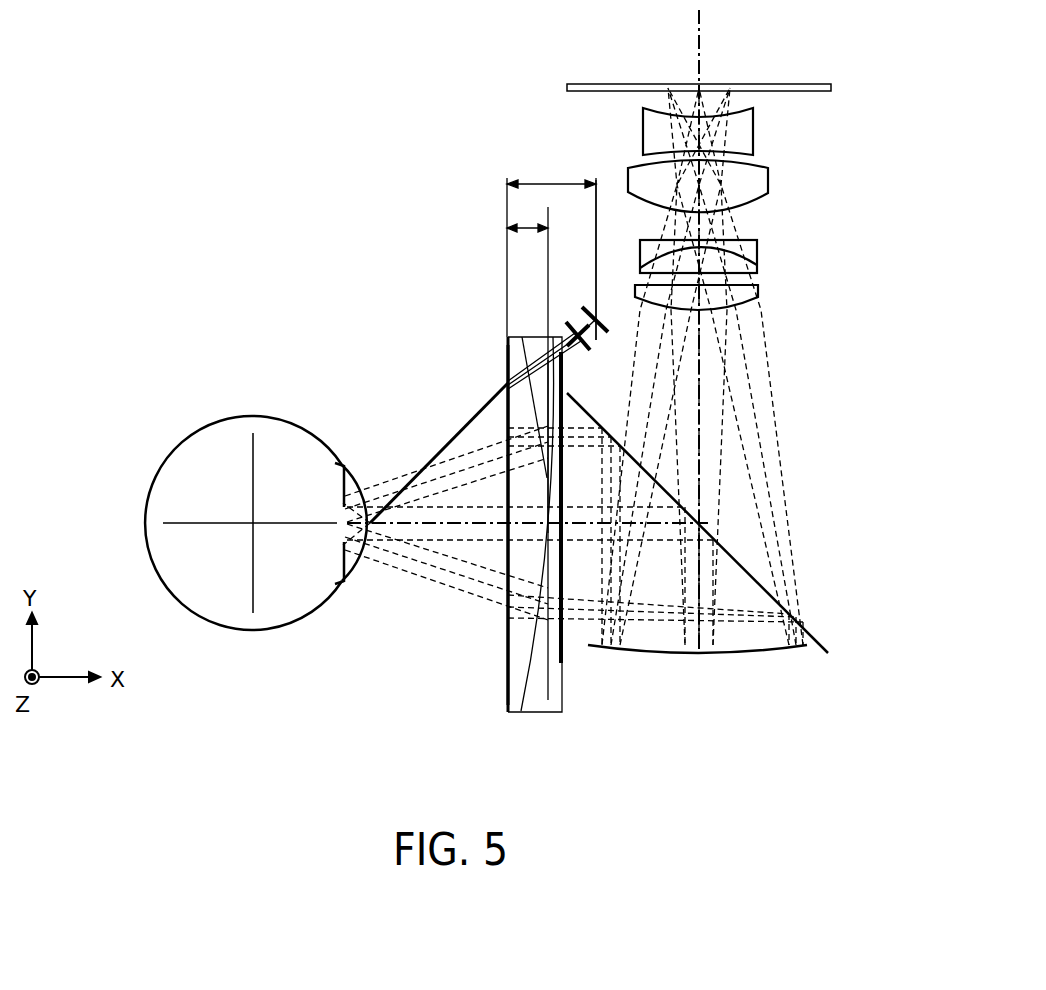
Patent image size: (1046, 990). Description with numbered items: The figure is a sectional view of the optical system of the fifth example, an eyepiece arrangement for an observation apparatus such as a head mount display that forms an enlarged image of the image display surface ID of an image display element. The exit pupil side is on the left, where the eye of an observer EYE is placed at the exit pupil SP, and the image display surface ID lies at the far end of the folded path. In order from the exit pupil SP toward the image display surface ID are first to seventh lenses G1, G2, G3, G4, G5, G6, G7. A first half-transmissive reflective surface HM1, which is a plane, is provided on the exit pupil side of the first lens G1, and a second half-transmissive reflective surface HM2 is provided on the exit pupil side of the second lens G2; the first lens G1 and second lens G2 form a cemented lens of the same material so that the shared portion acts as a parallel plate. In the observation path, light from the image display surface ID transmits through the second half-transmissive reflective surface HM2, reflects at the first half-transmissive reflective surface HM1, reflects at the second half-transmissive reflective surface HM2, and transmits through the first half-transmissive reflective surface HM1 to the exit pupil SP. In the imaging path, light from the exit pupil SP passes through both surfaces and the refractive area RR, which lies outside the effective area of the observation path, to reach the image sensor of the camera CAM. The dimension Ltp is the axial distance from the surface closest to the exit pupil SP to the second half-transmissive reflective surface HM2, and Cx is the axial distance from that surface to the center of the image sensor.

The image display surface ID is at (707, 84).
The seventh lens G7 is at (743, 127).
The sixth lens G6 is at (743, 175).
The fourth lens G4 is at (742, 260).
The fifth lens G5 is at (698, 257).
The third lens G3 is at (752, 295).
The camera CAM is at (576, 312).
The refractive area RR is at (556, 358).
The first lens G1 is at (513, 350).
The second lens G2 is at (543, 345).
The first half-transmissive reflective surface HM1 is at (515, 706).
The second half-transmissive reflective surface HM2 is at (528, 697).
The exit pupil SP is at (335, 472).
The eye of an observer EYE is at (283, 582).
The distance to image sensor center Cx is at (551, 246).
The distance to second half-transmissive reflective surface Ltp is at (527, 363).